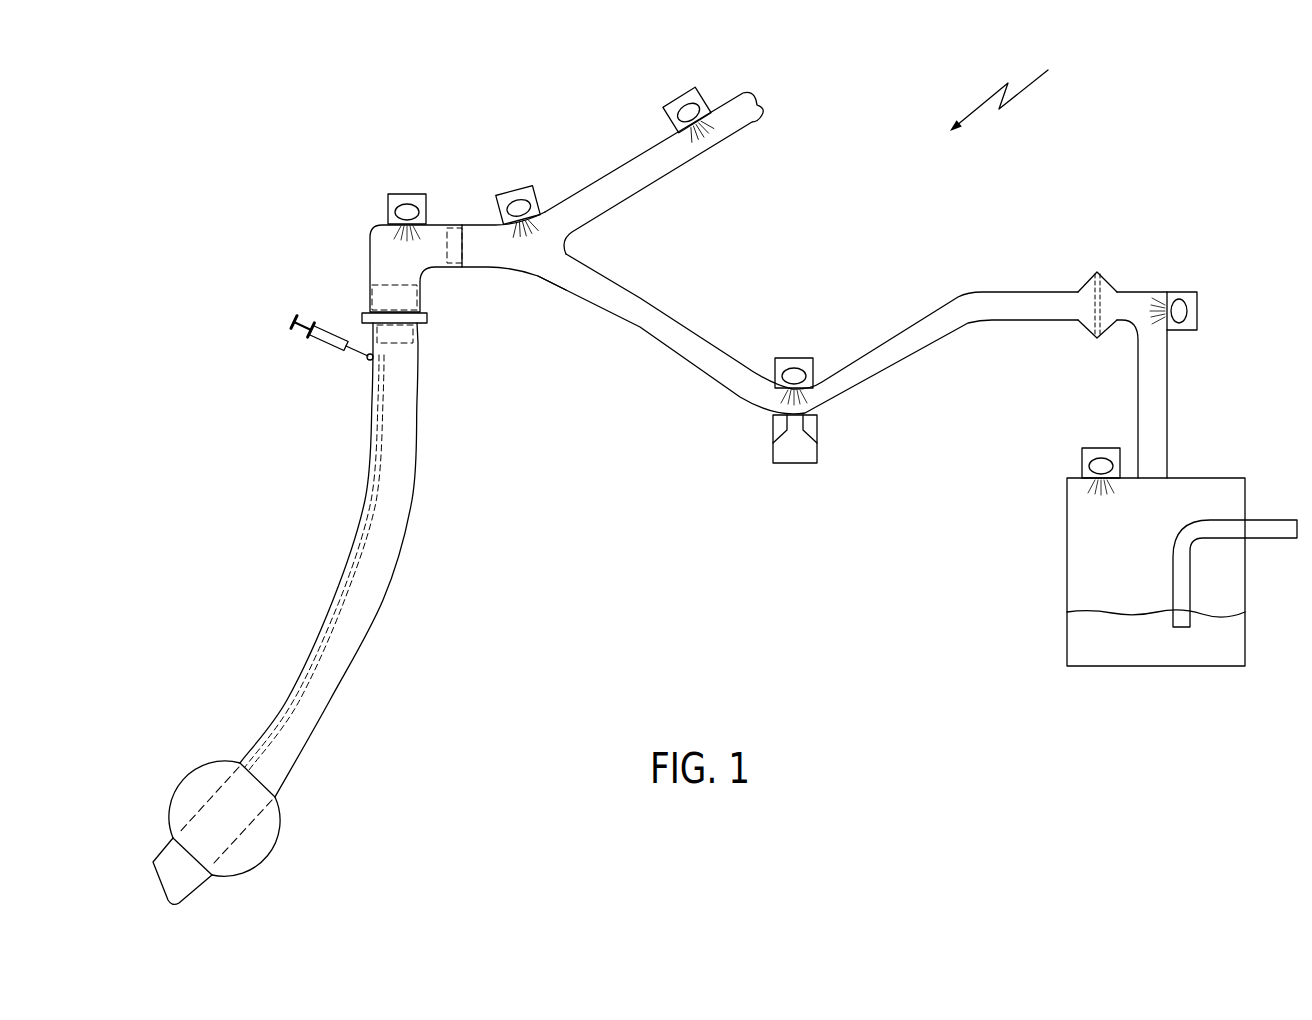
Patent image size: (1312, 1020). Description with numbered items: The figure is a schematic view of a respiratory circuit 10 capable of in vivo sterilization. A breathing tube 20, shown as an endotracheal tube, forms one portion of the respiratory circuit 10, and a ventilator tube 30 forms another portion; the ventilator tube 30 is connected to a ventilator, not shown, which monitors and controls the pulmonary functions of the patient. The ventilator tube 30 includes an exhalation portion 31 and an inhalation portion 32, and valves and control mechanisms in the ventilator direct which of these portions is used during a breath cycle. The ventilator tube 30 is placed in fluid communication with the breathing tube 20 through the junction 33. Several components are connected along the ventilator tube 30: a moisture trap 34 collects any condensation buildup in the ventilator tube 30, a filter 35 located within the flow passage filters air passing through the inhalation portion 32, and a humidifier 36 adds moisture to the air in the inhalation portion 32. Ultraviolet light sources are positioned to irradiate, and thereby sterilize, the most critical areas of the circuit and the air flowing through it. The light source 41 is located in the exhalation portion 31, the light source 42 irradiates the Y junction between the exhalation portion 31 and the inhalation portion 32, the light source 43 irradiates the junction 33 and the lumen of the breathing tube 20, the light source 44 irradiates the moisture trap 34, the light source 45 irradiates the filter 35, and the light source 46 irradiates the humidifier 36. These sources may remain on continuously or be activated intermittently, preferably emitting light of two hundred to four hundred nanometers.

The respiratory circuit 10 is at (1018, 85).
The breathing tube 20 is at (395, 563).
The ventilator tube 30 is at (493, 268).
The exhalation portion 31 is at (683, 172).
The inhalation portion 32 is at (653, 343).
The junction 33 is at (440, 222).
The moisture trap 34 is at (817, 452).
The filter 35 is at (1097, 270).
The humidifier 36 is at (1067, 573).
The light source 41 is at (681, 97).
The light source 42 is at (521, 188).
The light source 43 is at (396, 193).
The light source 44 is at (793, 358).
The light source 45 is at (1200, 310).
The light source 46 is at (1090, 447).